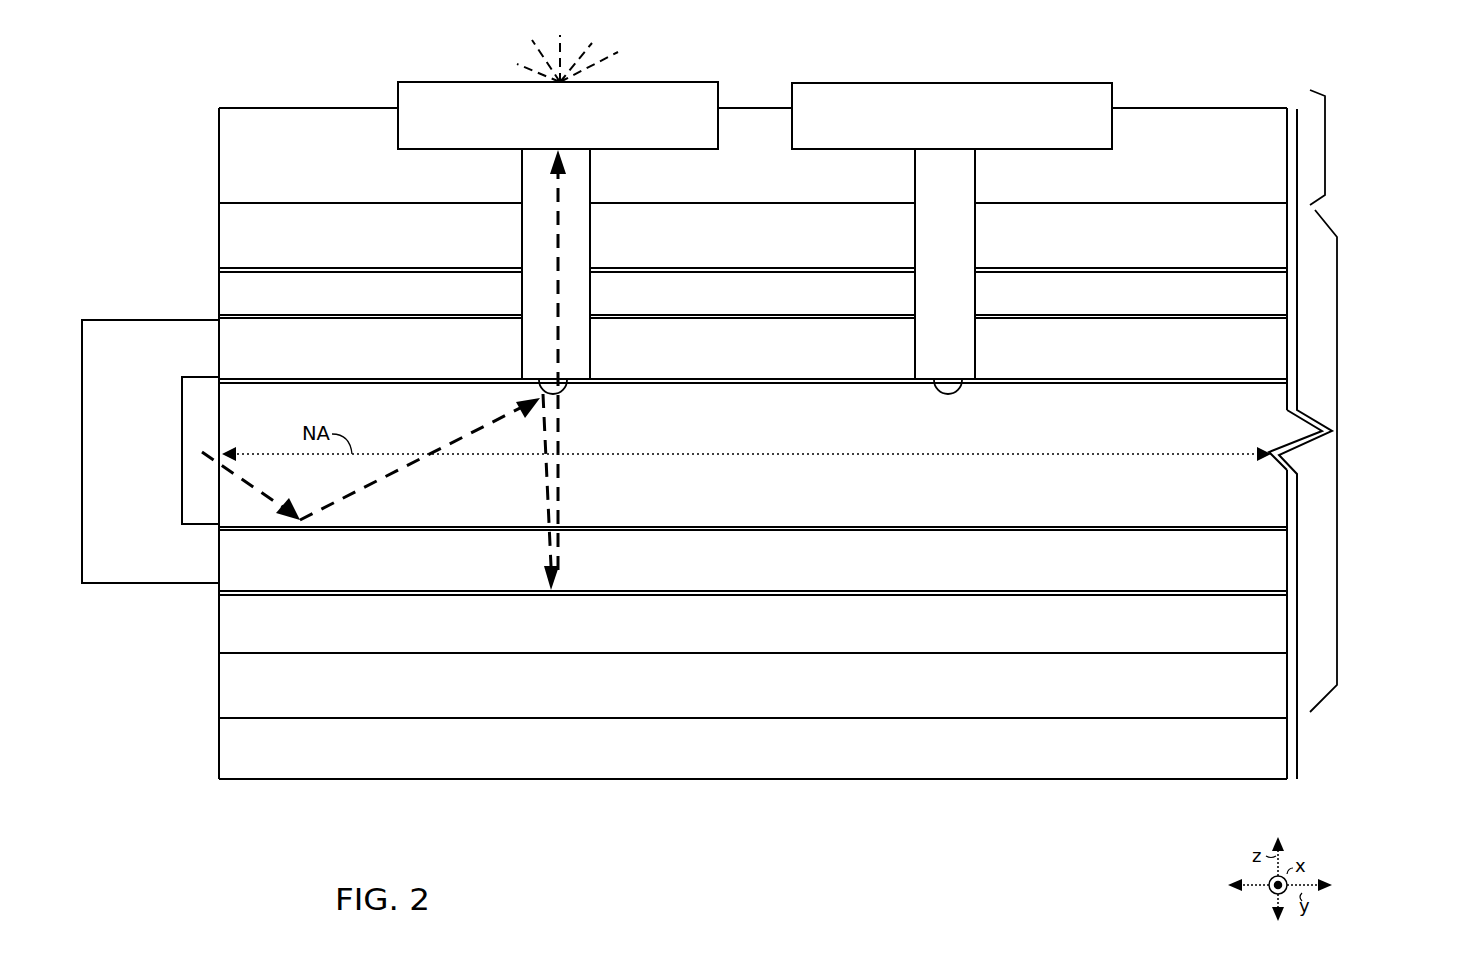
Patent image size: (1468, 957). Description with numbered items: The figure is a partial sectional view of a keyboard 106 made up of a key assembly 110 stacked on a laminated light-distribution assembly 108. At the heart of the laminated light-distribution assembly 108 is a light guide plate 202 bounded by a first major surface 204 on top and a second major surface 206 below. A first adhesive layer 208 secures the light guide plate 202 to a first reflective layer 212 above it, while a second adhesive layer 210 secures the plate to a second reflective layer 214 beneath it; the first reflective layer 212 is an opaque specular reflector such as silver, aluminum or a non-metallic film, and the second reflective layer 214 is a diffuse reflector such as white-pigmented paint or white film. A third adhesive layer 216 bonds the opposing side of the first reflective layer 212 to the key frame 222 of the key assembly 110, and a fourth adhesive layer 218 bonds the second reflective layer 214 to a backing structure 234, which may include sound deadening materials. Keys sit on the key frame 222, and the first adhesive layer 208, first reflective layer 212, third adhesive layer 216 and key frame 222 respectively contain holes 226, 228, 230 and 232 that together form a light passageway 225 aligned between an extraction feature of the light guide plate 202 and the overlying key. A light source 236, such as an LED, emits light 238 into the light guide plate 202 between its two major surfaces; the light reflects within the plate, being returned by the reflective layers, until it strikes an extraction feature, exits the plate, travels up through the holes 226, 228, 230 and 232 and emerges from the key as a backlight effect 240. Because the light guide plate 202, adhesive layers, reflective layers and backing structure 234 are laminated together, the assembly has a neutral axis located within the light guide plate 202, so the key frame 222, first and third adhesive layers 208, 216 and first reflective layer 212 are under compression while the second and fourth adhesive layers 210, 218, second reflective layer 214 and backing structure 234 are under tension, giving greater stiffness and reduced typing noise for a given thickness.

The keyboard 106 is at (1090, 30).
The key assembly 110 is at (1325, 163).
The laminated light-distribution assembly 108 is at (1337, 618).
The backlight effect 240 is at (509, 60).
The hole 232 is at (523, 178).
The hole 230 is at (523, 240).
The hole 228 is at (523, 291).
The hole 226 is at (523, 346).
The light passageway 225 is at (594, 180).
The key frame 222 is at (753, 443).
The third adhesive layer 216 is at (753, 251).
The first reflective layer 212 is at (753, 293).
The first adhesive layer 208 is at (753, 348).
The first major surface 204 is at (990, 380).
The light guide plate 202 is at (753, 455).
The second major surface 206 is at (970, 531).
The second adhesive layer 210 is at (753, 569).
The second reflective layer 214 is at (753, 624).
The fourth adhesive layer 218 is at (753, 698).
The backing structure 234 is at (753, 624).
The light source 236 is at (150, 451).
The light 238 is at (342, 497).